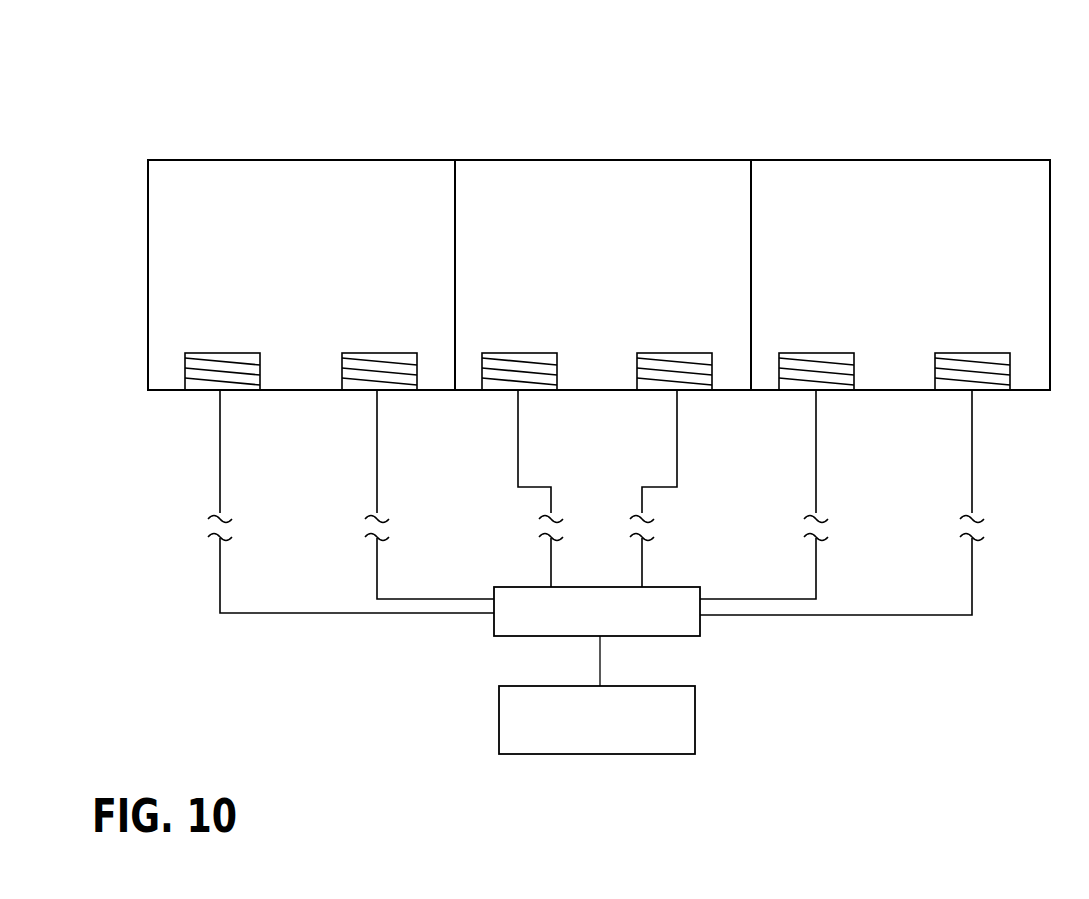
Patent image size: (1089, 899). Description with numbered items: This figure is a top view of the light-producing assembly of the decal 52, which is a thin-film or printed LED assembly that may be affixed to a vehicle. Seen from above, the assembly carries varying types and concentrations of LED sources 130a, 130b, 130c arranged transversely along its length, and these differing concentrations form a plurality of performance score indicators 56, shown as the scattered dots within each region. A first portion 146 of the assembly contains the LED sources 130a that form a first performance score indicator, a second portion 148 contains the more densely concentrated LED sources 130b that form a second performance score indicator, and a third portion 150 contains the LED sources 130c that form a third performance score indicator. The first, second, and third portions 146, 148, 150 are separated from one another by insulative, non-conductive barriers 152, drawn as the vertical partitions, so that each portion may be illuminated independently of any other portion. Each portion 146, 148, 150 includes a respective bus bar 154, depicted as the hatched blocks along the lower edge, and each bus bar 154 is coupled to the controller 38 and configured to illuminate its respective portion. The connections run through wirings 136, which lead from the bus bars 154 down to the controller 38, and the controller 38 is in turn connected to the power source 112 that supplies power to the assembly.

The decal 52 is at (1020, 106).
The LED sources 130a is at (327, 193).
The LED sources 130b is at (620, 177).
The LED sources 130c is at (942, 195).
The first portion 146 is at (240, 200).
The second portion 148 is at (558, 180).
The third portion 150 is at (868, 188).
The barriers 152 is at (456, 193).
The performance score indicators 56 is at (170, 242).
The bus bar 154 is at (203, 392).
The wirings 136 is at (642, 505).
The controller 38 is at (700, 628).
The power source 112 is at (696, 705).